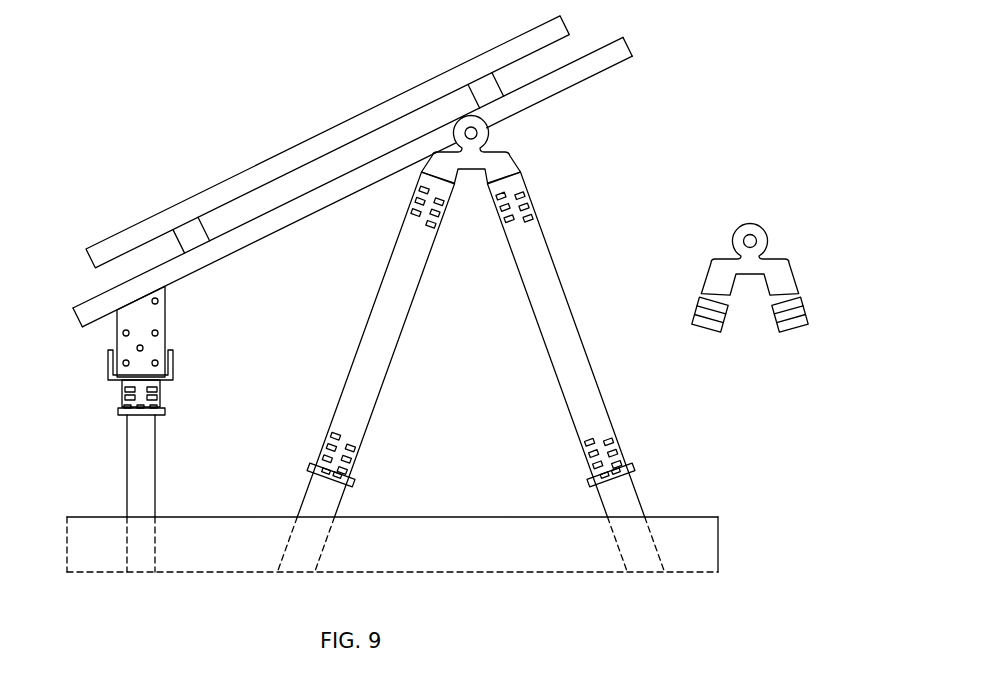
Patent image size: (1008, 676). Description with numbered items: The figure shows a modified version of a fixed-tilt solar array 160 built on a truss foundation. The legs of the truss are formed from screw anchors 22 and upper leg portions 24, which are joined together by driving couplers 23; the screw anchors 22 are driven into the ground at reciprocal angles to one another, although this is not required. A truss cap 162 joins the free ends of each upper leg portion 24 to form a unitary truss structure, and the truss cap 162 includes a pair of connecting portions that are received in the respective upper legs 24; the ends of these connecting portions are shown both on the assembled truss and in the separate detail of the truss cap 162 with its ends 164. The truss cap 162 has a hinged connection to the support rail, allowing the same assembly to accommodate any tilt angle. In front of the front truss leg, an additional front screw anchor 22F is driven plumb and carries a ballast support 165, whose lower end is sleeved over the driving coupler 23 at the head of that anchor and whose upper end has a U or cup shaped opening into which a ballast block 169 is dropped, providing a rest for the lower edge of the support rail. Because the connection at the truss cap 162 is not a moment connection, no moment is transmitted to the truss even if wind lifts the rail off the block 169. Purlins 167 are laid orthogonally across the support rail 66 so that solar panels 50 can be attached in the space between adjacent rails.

The solar panels 50 is at (318, 130).
The rail 66 is at (632, 45).
The purlins 167 is at (178, 228).
The fixed-tilt array 160 is at (584, 343).
The truss cap 162 is at (516, 156).
The bracket leg ends 164 is at (462, 183).
The upper leg portions 24 is at (570, 292).
The driving couplers 23 is at (632, 468).
The screw anchors 22 is at (643, 505).
The front screw anchor 22F is at (127, 460).
The ballast block 169 is at (167, 310).
The ballast support 165 is at (173, 365).